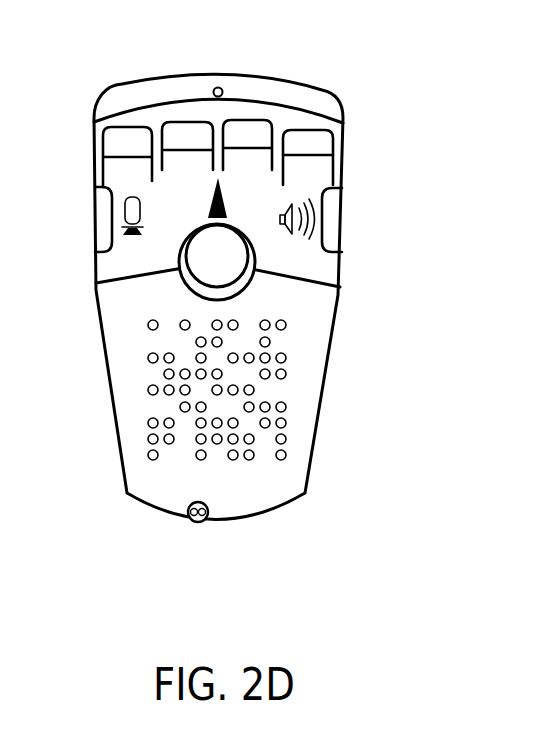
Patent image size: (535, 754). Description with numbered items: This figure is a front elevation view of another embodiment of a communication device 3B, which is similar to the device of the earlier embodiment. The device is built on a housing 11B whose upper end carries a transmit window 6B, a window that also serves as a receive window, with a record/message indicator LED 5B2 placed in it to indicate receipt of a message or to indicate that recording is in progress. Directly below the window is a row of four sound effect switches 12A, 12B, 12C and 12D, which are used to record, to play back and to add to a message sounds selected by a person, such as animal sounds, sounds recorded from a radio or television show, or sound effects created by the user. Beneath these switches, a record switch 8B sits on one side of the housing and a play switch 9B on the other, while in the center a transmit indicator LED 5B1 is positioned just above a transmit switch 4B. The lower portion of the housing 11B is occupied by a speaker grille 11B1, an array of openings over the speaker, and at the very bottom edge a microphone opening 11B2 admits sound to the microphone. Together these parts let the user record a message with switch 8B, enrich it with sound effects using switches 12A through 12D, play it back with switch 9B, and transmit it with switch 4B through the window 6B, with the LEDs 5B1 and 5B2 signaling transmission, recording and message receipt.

The communication device 3B is at (396, 447).
The transmit switch 4B is at (220, 265).
The transmit indicator LED 5B1 is at (222, 207).
The record/message indicator LED 5B2 is at (216, 87).
The transmit window 6B is at (123, 102).
The record switch 8B is at (103, 215).
The play switch 9B is at (333, 217).
The housing 11B is at (270, 493).
The speaker grille 11B1 is at (170, 405).
The microphone opening 11B2 is at (196, 523).
The sound effect switch 12A is at (123, 142).
The sound effect switch 12B is at (187, 132).
The sound effect switch 12C is at (252, 132).
The sound effect switch 12D is at (315, 142).